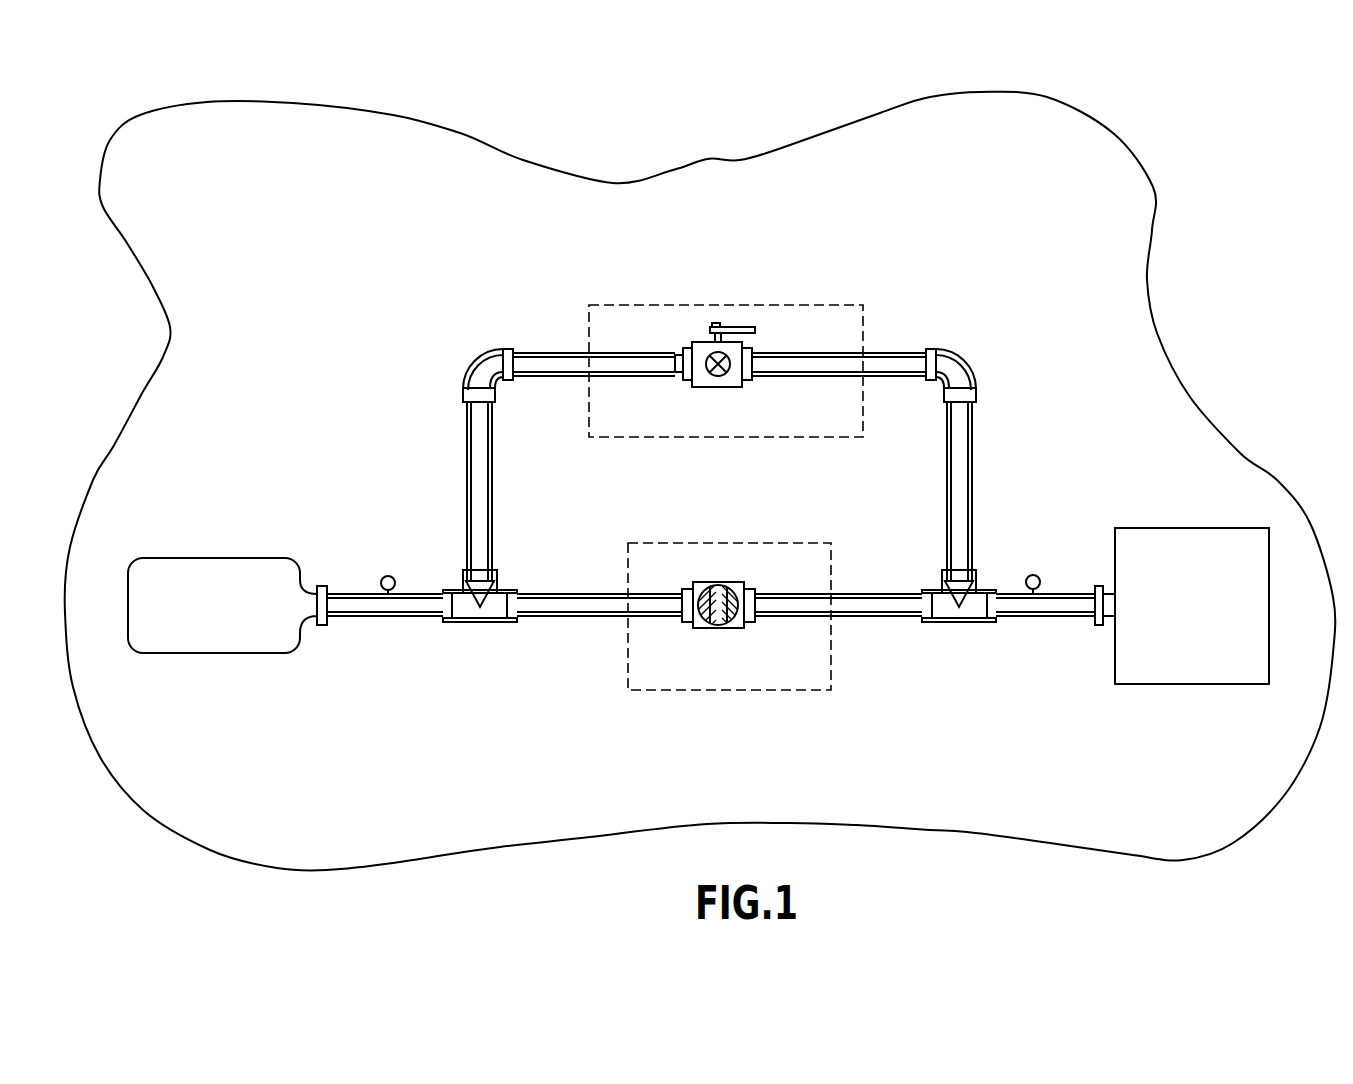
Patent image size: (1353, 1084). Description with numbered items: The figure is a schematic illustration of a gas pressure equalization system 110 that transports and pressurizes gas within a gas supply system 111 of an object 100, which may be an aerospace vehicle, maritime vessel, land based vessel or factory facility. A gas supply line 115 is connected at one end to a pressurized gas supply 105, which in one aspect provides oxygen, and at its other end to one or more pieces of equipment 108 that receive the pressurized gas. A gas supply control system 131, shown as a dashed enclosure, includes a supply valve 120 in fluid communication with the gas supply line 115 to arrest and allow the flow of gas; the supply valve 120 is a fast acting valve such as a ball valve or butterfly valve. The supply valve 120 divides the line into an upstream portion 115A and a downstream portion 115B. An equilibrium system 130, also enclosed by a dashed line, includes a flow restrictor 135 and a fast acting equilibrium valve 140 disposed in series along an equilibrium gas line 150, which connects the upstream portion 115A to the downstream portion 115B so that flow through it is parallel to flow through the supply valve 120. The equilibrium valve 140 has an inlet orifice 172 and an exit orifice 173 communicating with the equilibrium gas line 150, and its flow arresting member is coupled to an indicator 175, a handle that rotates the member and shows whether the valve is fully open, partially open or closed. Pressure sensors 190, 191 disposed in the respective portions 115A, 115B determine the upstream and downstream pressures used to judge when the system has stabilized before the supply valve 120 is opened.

The object 100 is at (1155, 188).
The gas supply 105 is at (188, 654).
The equipment 108 is at (1197, 685).
The gas pressure equalization system 110 is at (1024, 403).
The gas supply system 111 is at (260, 234).
The gas supply line 115 is at (534, 649).
The portion of the gas supply line 115A is at (533, 593).
The portion of the gas supply line 115B is at (918, 593).
The supply valve 120 is at (733, 630).
The equilibrium system 130 is at (667, 305).
The gas supply control system 131 is at (737, 690).
The flow restrictor 135 is at (677, 366).
The equilibrium valve 140 is at (728, 388).
The equilibrium gas line 150 is at (562, 341).
The inlet orifice 172 is at (680, 358).
The exit orifice 173 is at (752, 360).
The indicator 175 is at (747, 327).
The pressure sensor 190 is at (385, 576).
The pressure sensor 191 is at (1040, 577).